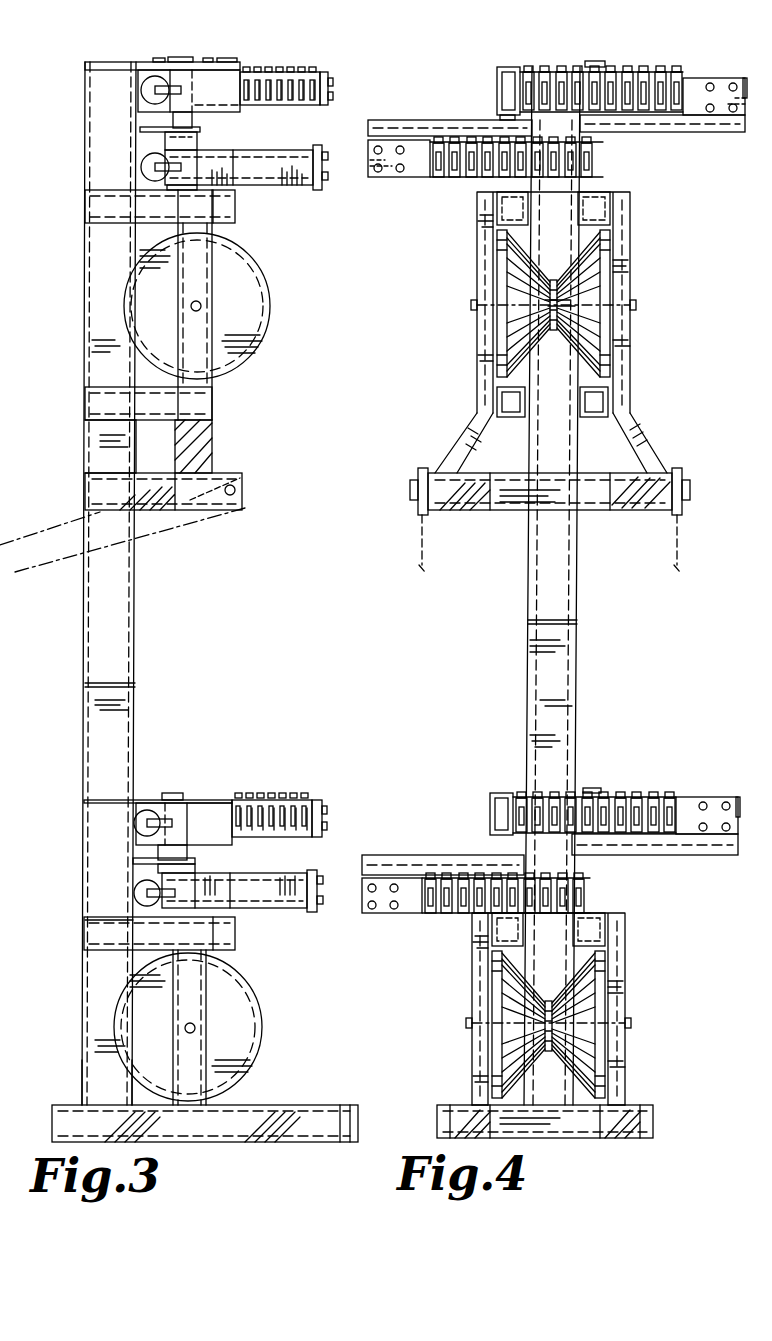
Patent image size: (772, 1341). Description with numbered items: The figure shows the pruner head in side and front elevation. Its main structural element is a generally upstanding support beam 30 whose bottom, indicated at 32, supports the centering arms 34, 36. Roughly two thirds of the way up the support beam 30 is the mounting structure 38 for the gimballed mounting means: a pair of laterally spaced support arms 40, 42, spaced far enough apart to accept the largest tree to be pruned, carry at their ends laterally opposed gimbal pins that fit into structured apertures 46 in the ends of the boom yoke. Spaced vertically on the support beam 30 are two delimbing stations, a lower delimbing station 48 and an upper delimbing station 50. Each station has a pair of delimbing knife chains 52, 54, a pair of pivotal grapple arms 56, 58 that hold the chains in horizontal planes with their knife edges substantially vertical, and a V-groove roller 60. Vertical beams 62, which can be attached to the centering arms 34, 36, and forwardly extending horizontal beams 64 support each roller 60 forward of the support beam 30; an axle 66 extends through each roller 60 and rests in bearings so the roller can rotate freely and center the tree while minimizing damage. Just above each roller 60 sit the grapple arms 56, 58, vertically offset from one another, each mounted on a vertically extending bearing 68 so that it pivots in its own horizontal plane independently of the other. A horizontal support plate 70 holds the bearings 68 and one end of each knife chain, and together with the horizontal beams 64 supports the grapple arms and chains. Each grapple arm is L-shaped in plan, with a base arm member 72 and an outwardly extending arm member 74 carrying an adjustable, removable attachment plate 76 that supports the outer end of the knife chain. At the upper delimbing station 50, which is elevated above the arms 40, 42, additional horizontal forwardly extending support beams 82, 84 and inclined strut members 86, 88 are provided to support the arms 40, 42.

In FIG. 3, the support beam 30 is at (118, 622).
In FIG. 4, the support beam 30 is at (565, 686).
In FIG. 3, the bottom of support beam 32 is at (82, 1072).
In FIG. 3, the centering arm 34 is at (305, 1120).
In FIG. 4, the centering arm 34 is at (455, 1105).
In FIG. 4, the centering arm 36 is at (636, 1104).
In FIG. 4, the mounting structure 38 is at (583, 498).
In FIG. 3, the support arm 40 is at (190, 482).
In FIG. 4, the support arm 40 is at (430, 516).
In FIG. 4, the support arm 42 is at (666, 514).
In FIG. 3, the structured aperture 46 is at (236, 511).
In FIG. 3, the lower delimbing station 48 is at (322, 789).
In FIG. 4, the lower delimbing station 48 is at (688, 792).
In FIG. 4, the upper delimbing station 50 is at (686, 183).
In FIG. 4, the delimbing knife chain 52 is at (470, 178).
In FIG. 3, the delimbing knife chain 54 is at (278, 106).
In FIG. 4, the delimbing knife chain 54 is at (645, 110).
In FIG. 4, the pivotal grapple arm 56 is at (368, 160).
In FIG. 4, the pivotal grapple arm 58 is at (745, 120).
In FIG. 3, the V-groove roller 60 is at (270, 296).
In FIG. 4, the V-groove roller 60 is at (597, 294).
In FIG. 3, the vertical beam 62 is at (192, 1090).
In FIG. 3, the horizontal beam 64 is at (232, 224).
In FIG. 4, the horizontal beam 64 is at (631, 206).
In FIG. 3, the axle 66 is at (191, 306).
In FIG. 4, the axle 66 is at (471, 305).
In FIG. 3, the vertical bearing 68 is at (185, 62).
In FIG. 4, the vertical bearing 68 is at (598, 62).
In FIG. 3, the horizontal support plate 70 is at (125, 62).
In FIG. 4, the horizontal support plate 70 is at (553, 67).
In FIG. 4, the base arm member 72 is at (445, 120).
In FIG. 3, the outwardly extending arm member 74 is at (260, 188).
In FIG. 3, the attachment plate 76 is at (333, 88).
In FIG. 4, the attachment plate 76 is at (380, 186).
In FIG. 3, the horizontal forwardly extending support beam 82 is at (118, 410).
In FIG. 4, the horizontal forwardly extending support beam 84 is at (606, 400).
In FIG. 3, the inclined strut member 86 is at (205, 458).
In FIG. 4, the inclined strut member 86 is at (462, 432).
In FIG. 4, the inclined strut member 88 is at (645, 460).